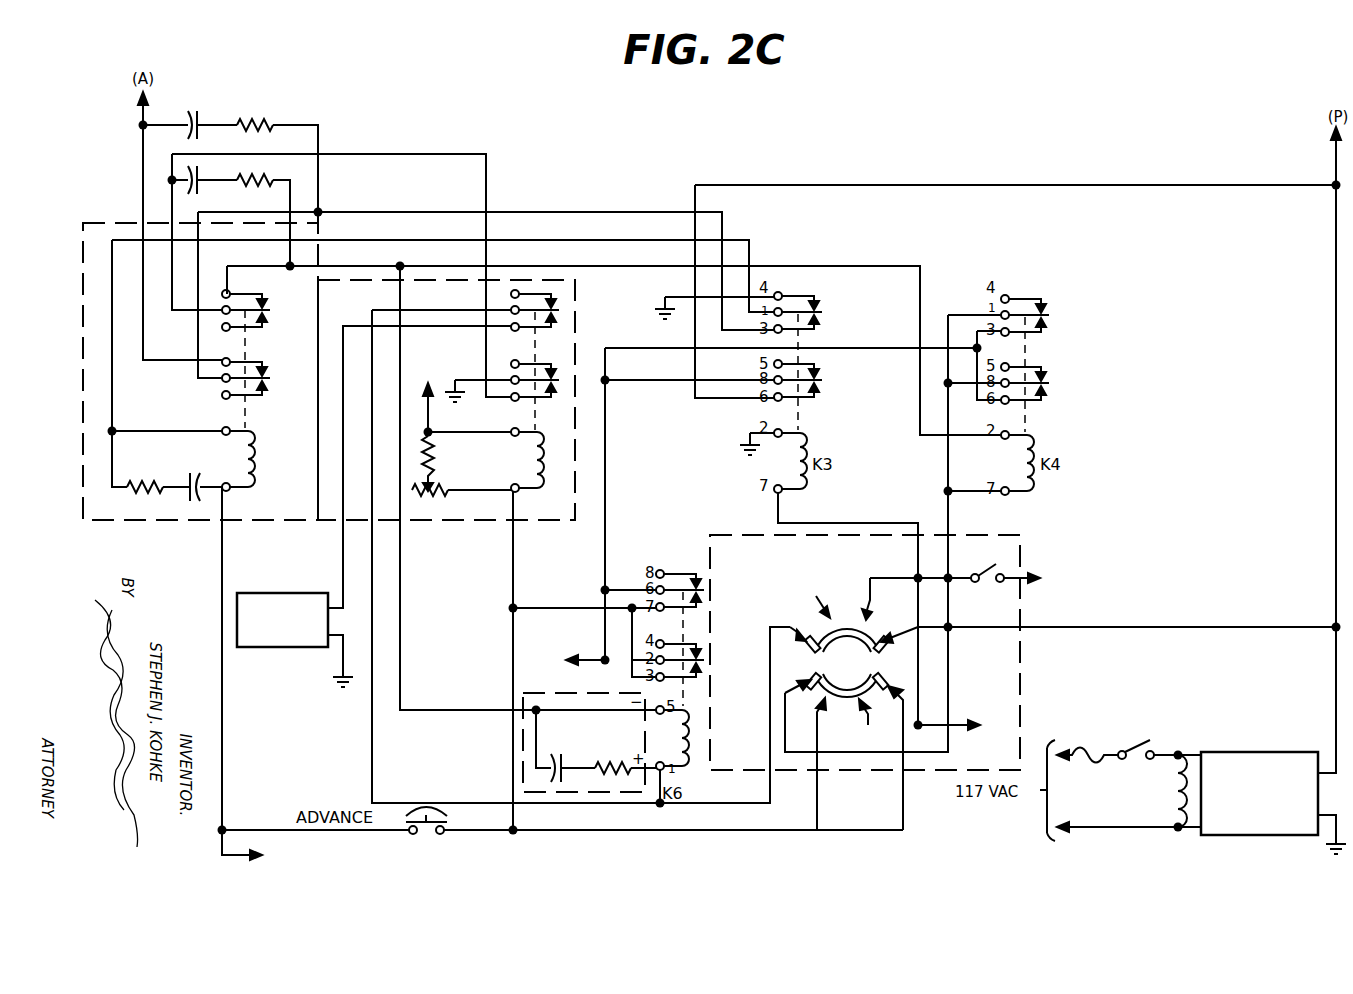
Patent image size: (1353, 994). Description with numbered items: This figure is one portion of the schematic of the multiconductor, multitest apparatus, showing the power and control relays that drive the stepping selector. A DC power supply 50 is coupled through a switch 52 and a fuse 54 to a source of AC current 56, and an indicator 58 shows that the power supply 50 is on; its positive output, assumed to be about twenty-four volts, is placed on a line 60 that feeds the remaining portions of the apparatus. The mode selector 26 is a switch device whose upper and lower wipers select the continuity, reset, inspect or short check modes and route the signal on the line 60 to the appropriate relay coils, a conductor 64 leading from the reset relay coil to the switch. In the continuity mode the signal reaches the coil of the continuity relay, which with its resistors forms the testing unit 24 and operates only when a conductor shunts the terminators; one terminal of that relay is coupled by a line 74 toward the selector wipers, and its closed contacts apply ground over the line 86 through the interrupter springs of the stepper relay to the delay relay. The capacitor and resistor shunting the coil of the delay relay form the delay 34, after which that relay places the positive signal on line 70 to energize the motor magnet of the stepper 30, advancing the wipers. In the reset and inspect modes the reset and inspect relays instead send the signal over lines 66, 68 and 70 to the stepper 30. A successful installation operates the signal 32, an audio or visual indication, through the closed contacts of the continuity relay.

The testing unit 24 is at (554, 541).
The mode selector 26 is at (1022, 680).
The stepper 30 is at (180, 522).
The signal 32 is at (320, 590).
The delay 34 is at (572, 698).
The DC power supply 50 is at (1280, 752).
The switch 52 is at (1140, 759).
The fuse 54 is at (1083, 759).
The source of AC current 56 is at (1055, 822).
The indicator 58 is at (1176, 812).
The line 60 is at (1334, 700).
The conductor from relay K3 to function switch 64 is at (890, 523).
The line 66 is at (607, 528).
The line 68 is at (605, 640).
The line 70 is at (222, 548).
The line 74 is at (425, 420).
The line 86 is at (486, 168).